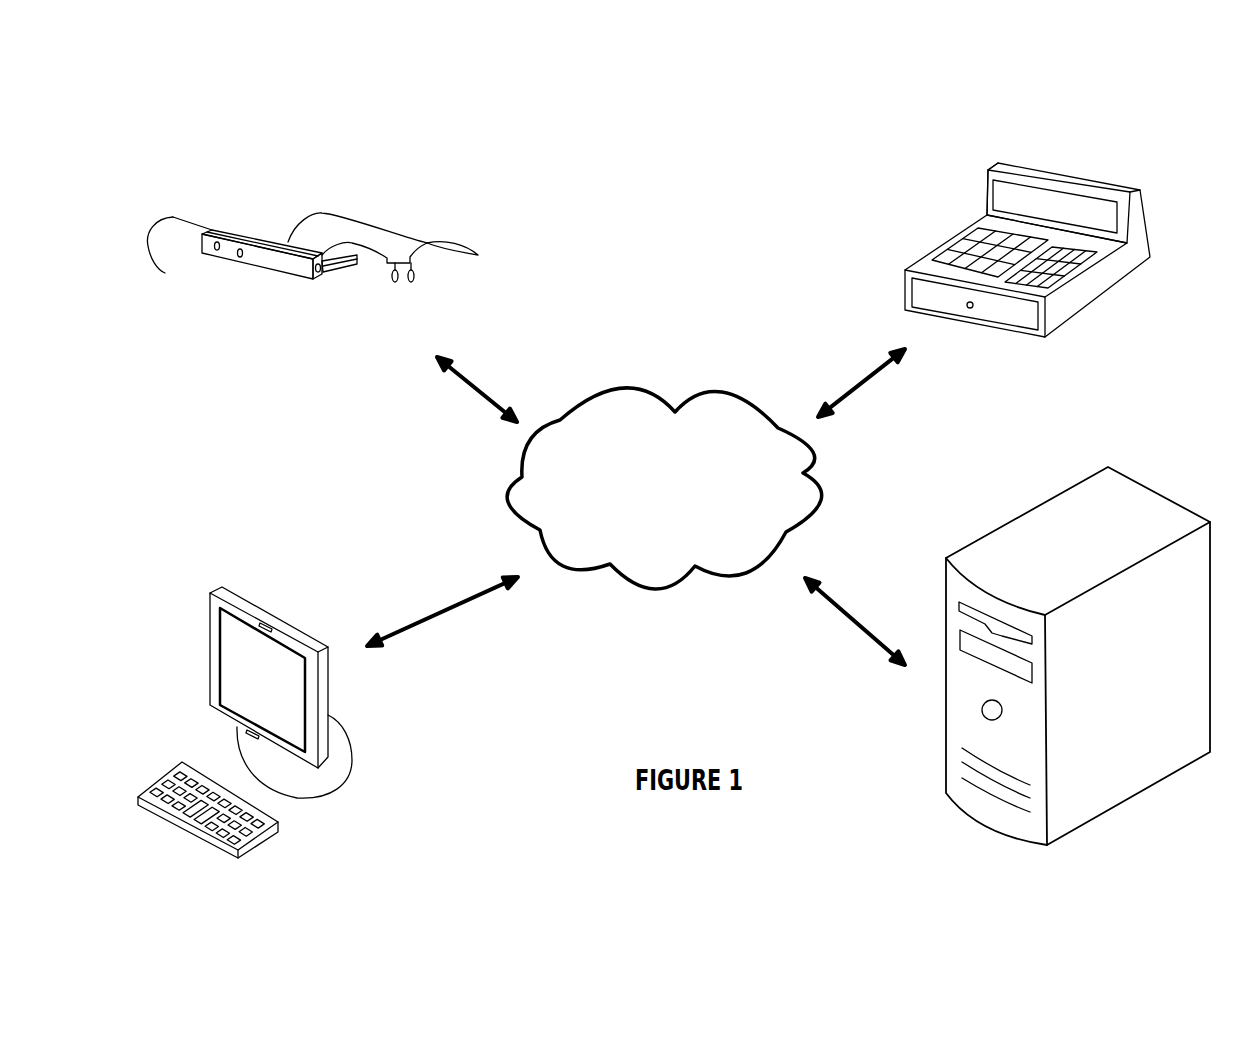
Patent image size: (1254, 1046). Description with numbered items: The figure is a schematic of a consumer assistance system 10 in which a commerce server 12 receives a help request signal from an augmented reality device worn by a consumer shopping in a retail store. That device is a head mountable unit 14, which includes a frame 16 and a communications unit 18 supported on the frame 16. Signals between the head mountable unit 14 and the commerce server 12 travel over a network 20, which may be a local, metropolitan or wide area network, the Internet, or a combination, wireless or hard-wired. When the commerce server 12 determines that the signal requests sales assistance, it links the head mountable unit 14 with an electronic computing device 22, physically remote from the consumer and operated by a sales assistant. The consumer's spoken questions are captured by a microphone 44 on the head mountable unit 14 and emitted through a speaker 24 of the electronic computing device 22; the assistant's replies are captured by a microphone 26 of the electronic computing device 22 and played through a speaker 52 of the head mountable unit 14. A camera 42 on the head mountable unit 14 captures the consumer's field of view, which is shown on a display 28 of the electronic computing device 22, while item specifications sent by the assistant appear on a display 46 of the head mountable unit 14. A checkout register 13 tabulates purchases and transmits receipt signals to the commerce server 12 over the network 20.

The consumer assistance system 10 is at (677, 156).
The commerce server 12 is at (1063, 837).
The checkout register 13 is at (1067, 323).
The head mountable unit 14 is at (311, 254).
The frame 16 is at (365, 225).
The communications unit 18 is at (271, 328).
The network 20 is at (632, 586).
The electronic computing device 22 is at (296, 731).
The speaker 24 is at (247, 730).
The microphone 26 is at (296, 671).
The display 28 is at (263, 683).
The camera 42 is at (322, 280).
The microphone 44 is at (240, 258).
The display 46 is at (347, 272).
The speaker 52 is at (213, 257).